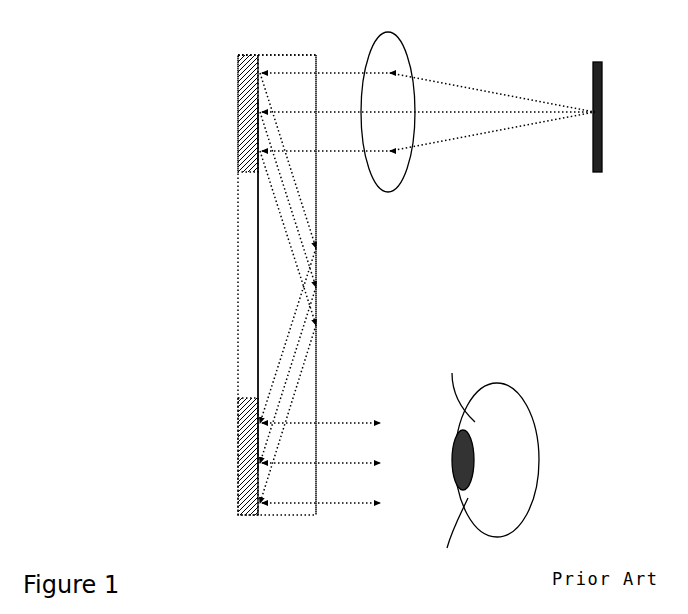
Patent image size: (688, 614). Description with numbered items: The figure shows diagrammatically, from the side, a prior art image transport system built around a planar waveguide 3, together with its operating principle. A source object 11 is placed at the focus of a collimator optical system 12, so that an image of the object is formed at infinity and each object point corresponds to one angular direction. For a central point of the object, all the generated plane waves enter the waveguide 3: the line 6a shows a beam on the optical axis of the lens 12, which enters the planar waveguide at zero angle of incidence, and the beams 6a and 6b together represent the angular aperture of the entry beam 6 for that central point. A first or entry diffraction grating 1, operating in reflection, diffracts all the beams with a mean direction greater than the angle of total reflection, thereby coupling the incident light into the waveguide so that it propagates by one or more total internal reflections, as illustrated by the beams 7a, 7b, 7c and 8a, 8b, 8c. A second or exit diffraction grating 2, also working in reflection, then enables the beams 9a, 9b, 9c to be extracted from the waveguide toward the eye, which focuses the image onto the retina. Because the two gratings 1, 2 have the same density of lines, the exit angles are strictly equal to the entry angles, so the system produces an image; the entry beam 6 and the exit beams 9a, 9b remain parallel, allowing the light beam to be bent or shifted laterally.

The first diffraction grating 1 is at (239, 113).
The second diffraction grating 2 is at (239, 457).
The waveguide 3 is at (288, 53).
The entry beam 6 is at (299, 285).
The plane wave on optical axis 6a is at (337, 112).
The plane wave 6b is at (335, 73).
The beam 7a is at (283, 203).
The beam 7b is at (293, 173).
The beam 7c is at (282, 225).
The beam 8a is at (283, 358).
The beam 8b is at (290, 318).
The beam 8c is at (297, 390).
The exit beam 9a is at (337, 462).
The exit beam 9b is at (342, 502).
The exit beam 9c is at (329, 423).
The source object 11 is at (597, 175).
The collimator optical system 12 is at (388, 35).